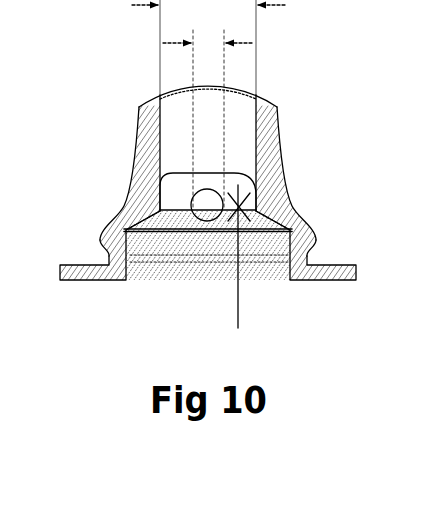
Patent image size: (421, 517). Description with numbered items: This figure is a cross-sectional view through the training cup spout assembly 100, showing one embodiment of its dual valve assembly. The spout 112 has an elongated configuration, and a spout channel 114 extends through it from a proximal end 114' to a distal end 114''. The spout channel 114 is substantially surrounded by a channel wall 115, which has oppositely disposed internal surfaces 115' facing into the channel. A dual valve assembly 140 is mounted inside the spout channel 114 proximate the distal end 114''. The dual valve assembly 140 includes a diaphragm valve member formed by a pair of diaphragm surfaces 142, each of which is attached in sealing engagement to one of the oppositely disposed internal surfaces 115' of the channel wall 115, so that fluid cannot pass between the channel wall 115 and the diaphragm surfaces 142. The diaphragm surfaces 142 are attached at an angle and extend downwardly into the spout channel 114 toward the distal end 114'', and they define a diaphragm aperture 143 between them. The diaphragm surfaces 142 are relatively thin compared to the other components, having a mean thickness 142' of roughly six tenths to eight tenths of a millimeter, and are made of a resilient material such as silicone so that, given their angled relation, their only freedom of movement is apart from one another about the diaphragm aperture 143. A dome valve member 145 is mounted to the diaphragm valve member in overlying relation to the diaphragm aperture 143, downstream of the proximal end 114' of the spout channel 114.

The training cup spout assembly 100 is at (284, 132).
The spout 112 is at (138, 106).
The spout channel 114 is at (207, 120).
The proximal end 114' is at (257, 47).
The distal end 114'' is at (298, 271).
The channel wall 115 is at (248, 230).
The internal surface 115' is at (314, 161).
The dual valve assembly 140 is at (171, 232).
The diaphragm surface 142 is at (154, 167).
The mean thickness 142' is at (242, 271).
The diaphragm aperture 143 is at (205, 210).
The dome valve member 145 is at (212, 232).